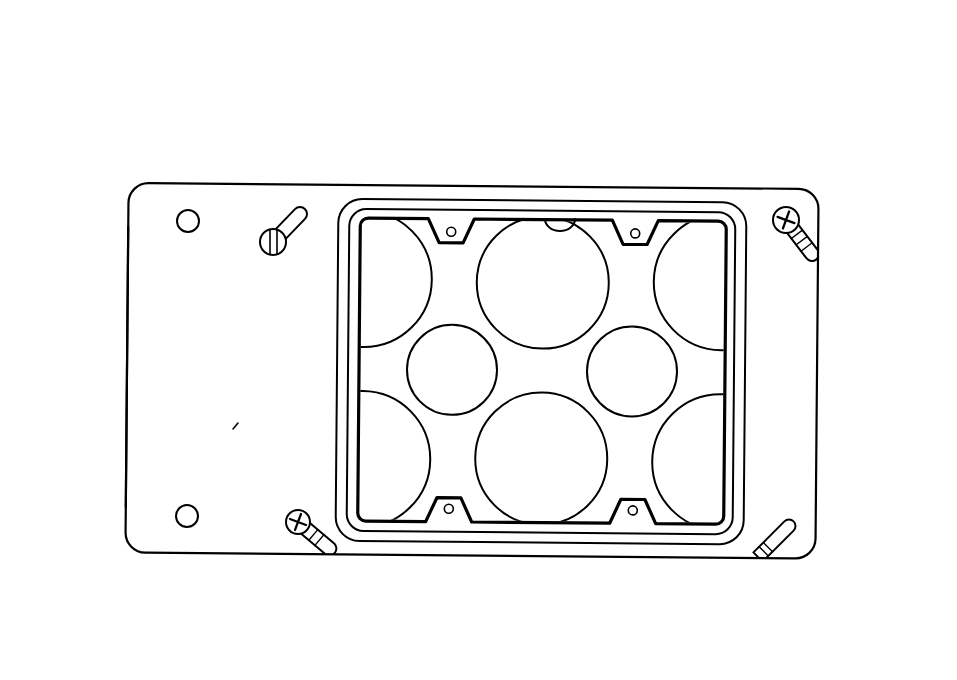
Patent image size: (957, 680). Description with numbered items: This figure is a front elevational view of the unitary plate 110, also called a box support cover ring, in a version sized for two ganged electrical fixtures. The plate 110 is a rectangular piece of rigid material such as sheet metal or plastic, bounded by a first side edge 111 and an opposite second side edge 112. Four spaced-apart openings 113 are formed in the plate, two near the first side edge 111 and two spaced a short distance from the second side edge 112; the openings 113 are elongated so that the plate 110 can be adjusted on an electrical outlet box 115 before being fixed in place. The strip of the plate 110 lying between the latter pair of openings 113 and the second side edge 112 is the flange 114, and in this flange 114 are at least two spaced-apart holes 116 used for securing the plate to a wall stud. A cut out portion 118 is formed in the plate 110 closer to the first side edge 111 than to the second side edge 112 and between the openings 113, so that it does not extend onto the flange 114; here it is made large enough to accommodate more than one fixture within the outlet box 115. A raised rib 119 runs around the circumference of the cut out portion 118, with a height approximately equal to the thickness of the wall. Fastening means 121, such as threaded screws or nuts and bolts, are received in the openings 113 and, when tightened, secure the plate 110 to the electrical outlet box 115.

The unitary plate 110 is at (379, 126).
The first side edge 111 is at (818, 327).
The second side edge 112 is at (127, 323).
The openings 113 is at (270, 232).
The flange 114 is at (238, 423).
The electrical outlet box 115 is at (528, 291).
The holes 116 is at (180, 207).
The cut out portion 118 is at (575, 227).
The raised rib 119 is at (687, 532).
The fastening means 121 is at (778, 205).